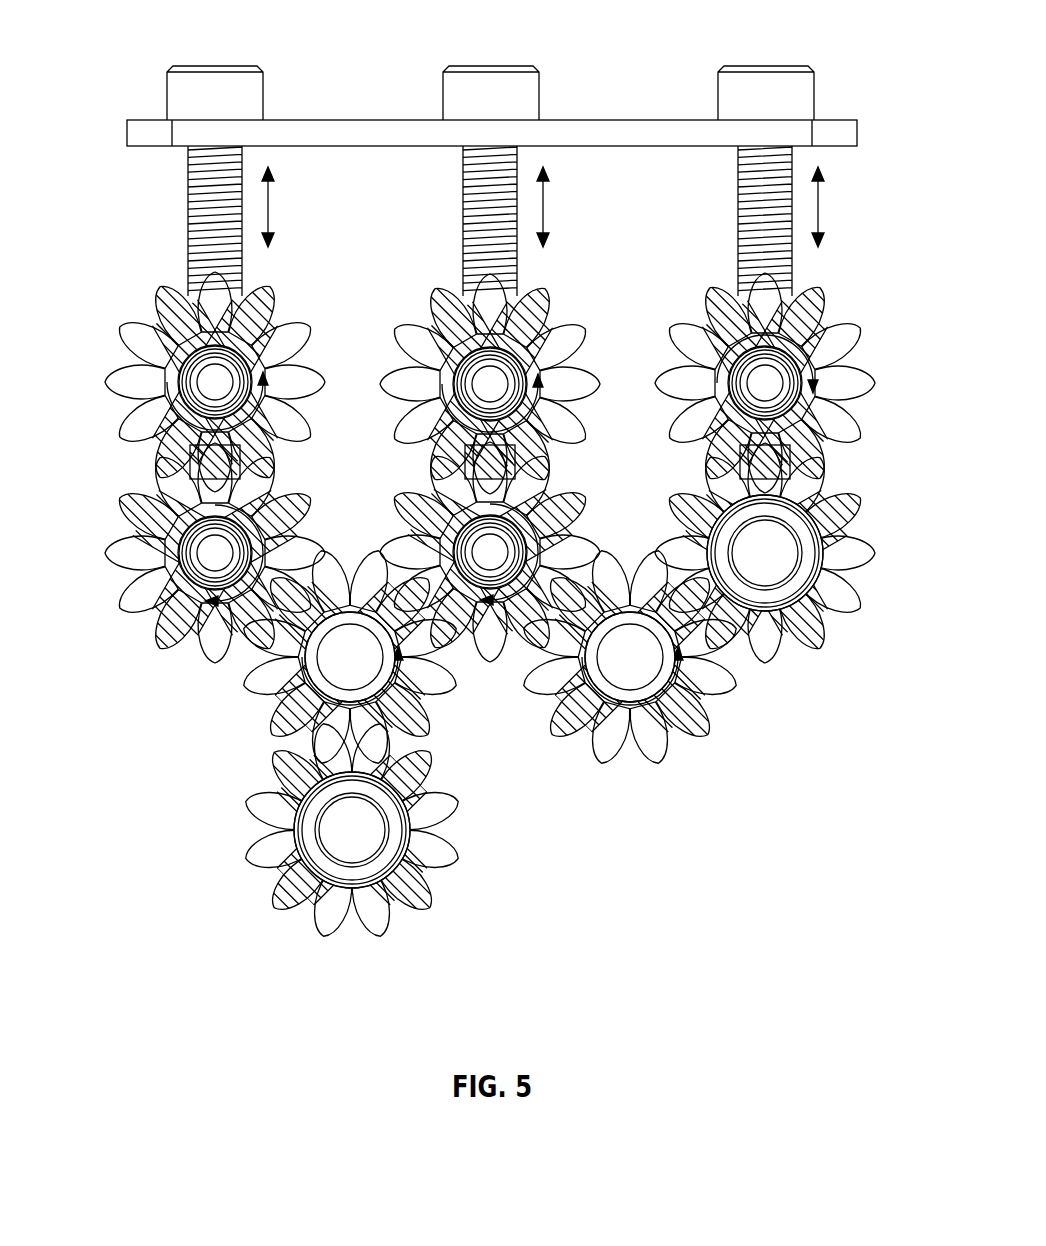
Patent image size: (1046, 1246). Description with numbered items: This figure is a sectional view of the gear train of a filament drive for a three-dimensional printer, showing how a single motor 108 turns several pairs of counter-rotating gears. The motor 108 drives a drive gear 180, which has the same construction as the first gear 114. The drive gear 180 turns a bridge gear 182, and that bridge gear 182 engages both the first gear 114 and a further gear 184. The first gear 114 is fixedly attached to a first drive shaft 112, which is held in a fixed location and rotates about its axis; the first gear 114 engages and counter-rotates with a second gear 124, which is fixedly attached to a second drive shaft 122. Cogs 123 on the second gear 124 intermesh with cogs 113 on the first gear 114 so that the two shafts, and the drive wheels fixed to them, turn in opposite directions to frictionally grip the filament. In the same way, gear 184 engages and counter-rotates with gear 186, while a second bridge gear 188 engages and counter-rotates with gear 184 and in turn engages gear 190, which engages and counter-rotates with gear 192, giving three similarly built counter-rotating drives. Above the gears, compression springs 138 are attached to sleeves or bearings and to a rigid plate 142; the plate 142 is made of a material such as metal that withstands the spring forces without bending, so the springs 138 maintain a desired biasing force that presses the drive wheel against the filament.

The motor 108 is at (496, 620).
The first drive shaft 112 is at (215, 553).
The cogs 113 is at (215, 553).
The first gear 114 is at (110, 618).
The second drive shaft 122 is at (215, 382).
The cogs 123 is at (170, 458).
The second gear 124 is at (215, 382).
The compression spring 138 is at (188, 203).
The plate 142 is at (637, 128).
The drive gear 180 is at (312, 848).
The bridge gear 182 is at (277, 718).
The gear 184 is at (490, 660).
The gear 186 is at (535, 305).
The bridge gear 188 is at (697, 730).
The gear 190 is at (866, 553).
The gear 192 is at (852, 326).